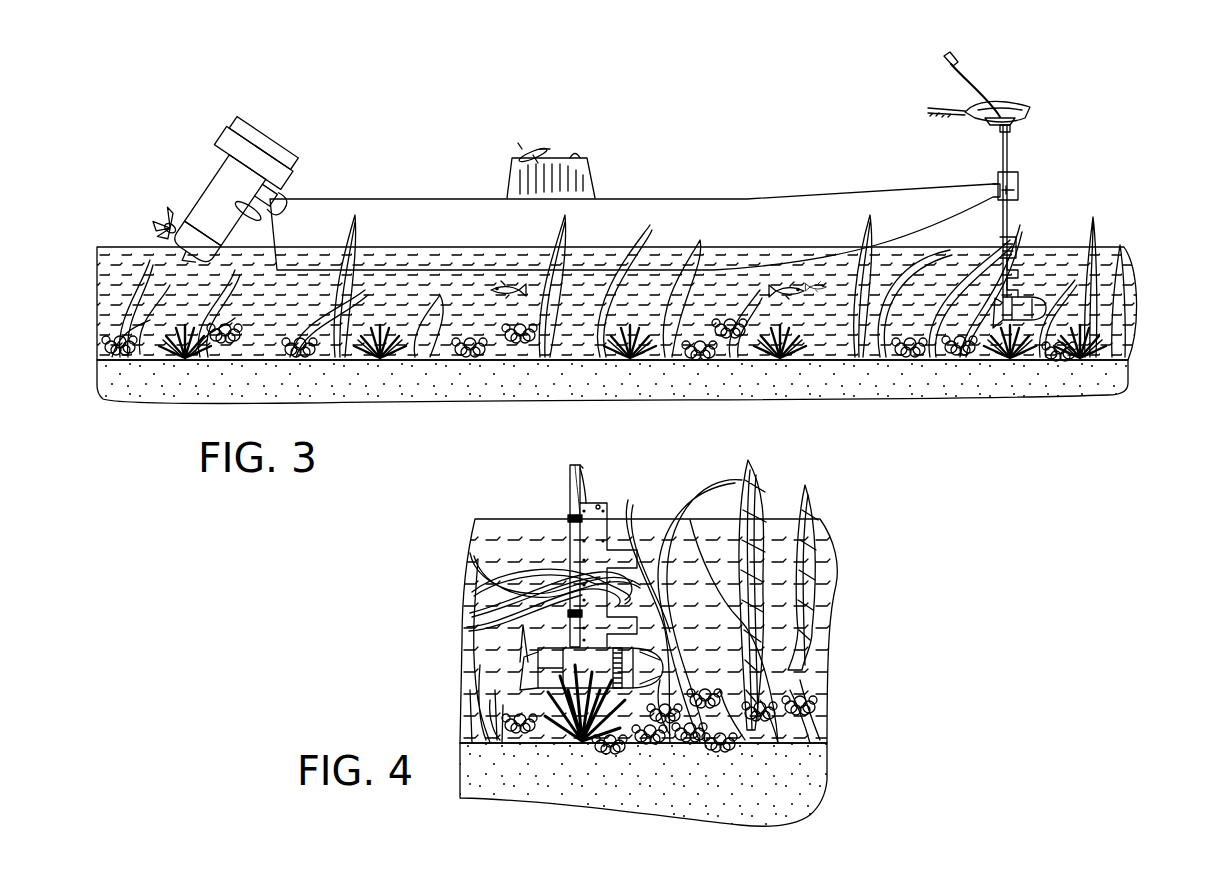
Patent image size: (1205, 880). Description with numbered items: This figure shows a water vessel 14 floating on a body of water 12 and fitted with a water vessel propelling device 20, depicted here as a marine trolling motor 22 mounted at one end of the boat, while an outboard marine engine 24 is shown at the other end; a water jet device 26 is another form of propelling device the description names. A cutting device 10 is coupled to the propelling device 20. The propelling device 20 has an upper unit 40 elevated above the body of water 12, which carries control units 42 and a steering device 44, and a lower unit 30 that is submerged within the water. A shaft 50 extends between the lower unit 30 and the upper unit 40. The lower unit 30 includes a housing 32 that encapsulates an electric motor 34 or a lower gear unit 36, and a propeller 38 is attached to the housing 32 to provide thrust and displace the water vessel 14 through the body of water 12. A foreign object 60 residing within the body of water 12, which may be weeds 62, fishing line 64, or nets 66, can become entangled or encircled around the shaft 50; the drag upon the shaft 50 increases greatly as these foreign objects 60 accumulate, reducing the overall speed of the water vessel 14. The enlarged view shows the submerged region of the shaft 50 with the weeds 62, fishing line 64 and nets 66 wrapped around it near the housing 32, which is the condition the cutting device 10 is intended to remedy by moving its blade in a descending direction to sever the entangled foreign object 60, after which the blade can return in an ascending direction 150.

In FIG. 3, the cutting device 10 is at (1020, 225).
In FIG. 4, the cutting device 10 is at (598, 505).
In FIG. 3, the body of water 12 is at (1140, 257).
In FIG. 4, the body of water 12 is at (830, 582).
In FIG. 3, the water vessel 14 is at (765, 199).
In FIG. 3, the water vessel propelling device 20 is at (968, 82).
In FIG. 4, the water vessel propelling device 20 is at (576, 466).
In FIG. 3, the marine trolling motor 22 is at (1012, 102).
In FIG. 3, the outboard marine engine 24 is at (262, 123).
In FIG. 3, the water jet device 26 is at (572, 185).
In FIG. 3, the lower unit 30 is at (1045, 340).
In FIG. 4, the lower unit 30 is at (622, 730).
In FIG. 4, the housing 32 is at (565, 663).
In FIG. 4, the electric motor 34 is at (643, 663).
In FIG. 4, the lower gear unit 36 is at (530, 688).
In FIG. 4, the propeller 38 is at (520, 663).
In FIG. 3, the upper unit 40 is at (944, 78).
In FIG. 3, the control units 42 is at (942, 108).
In FIG. 3, the steering device 44 is at (928, 110).
In FIG. 3, the shaft 50 is at (1017, 195).
In FIG. 4, the shaft 50 is at (570, 482).
In FIG. 3, the foreign object 60 is at (1093, 217).
In FIG. 4, the foreign object 60 is at (468, 573).
In FIG. 4, the weeds 62 is at (472, 592).
In FIG. 4, the fishing line 64 is at (470, 613).
In FIG. 4, the nets 66 is at (467, 627).
In FIG. 3, the ascending direction 150 is at (1017, 237).
In FIG. 4, the ascending direction 150 is at (622, 623).